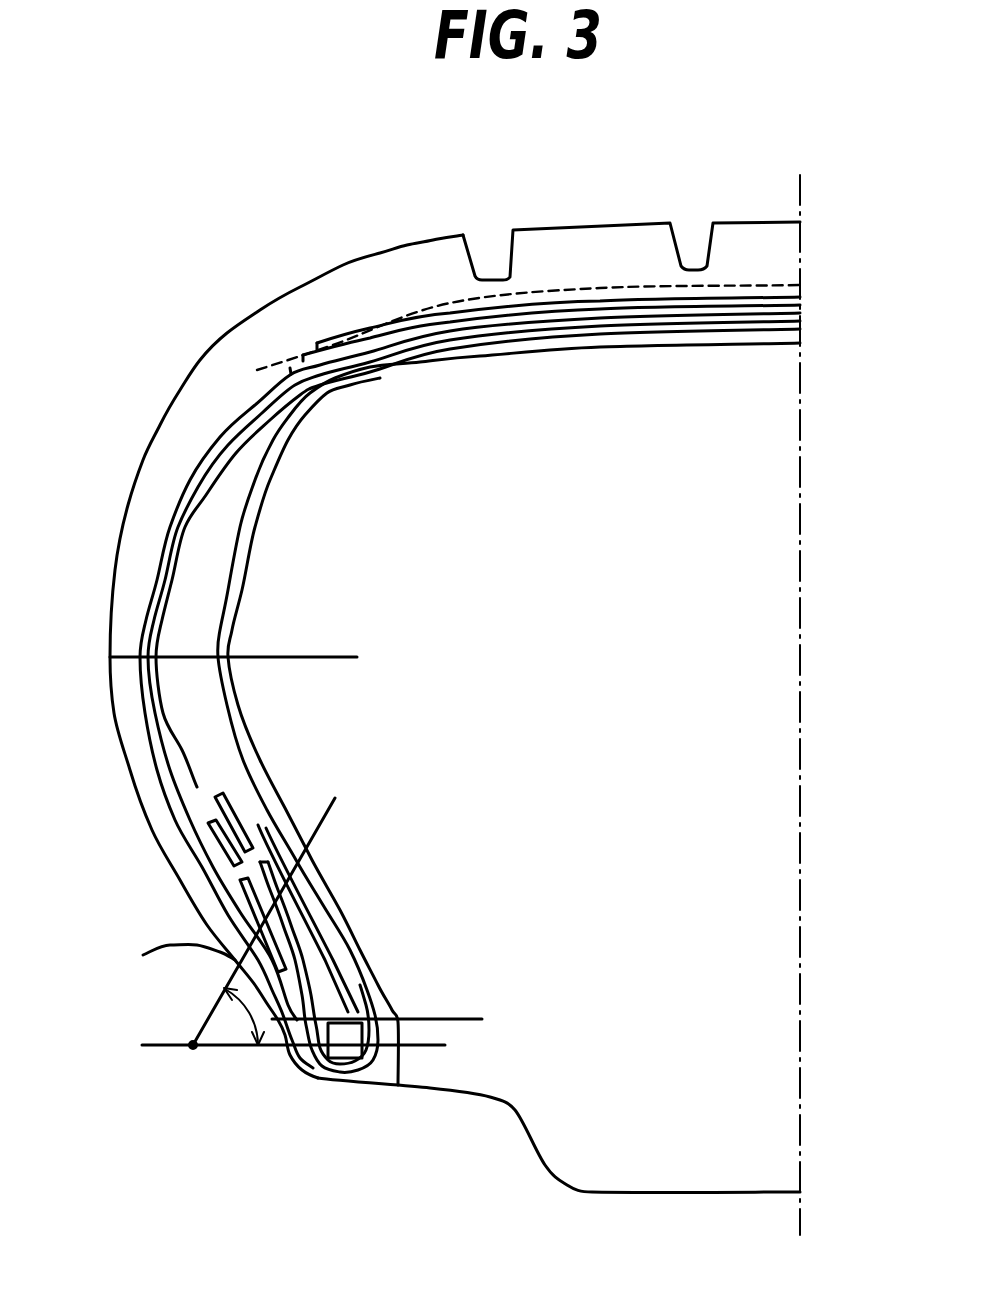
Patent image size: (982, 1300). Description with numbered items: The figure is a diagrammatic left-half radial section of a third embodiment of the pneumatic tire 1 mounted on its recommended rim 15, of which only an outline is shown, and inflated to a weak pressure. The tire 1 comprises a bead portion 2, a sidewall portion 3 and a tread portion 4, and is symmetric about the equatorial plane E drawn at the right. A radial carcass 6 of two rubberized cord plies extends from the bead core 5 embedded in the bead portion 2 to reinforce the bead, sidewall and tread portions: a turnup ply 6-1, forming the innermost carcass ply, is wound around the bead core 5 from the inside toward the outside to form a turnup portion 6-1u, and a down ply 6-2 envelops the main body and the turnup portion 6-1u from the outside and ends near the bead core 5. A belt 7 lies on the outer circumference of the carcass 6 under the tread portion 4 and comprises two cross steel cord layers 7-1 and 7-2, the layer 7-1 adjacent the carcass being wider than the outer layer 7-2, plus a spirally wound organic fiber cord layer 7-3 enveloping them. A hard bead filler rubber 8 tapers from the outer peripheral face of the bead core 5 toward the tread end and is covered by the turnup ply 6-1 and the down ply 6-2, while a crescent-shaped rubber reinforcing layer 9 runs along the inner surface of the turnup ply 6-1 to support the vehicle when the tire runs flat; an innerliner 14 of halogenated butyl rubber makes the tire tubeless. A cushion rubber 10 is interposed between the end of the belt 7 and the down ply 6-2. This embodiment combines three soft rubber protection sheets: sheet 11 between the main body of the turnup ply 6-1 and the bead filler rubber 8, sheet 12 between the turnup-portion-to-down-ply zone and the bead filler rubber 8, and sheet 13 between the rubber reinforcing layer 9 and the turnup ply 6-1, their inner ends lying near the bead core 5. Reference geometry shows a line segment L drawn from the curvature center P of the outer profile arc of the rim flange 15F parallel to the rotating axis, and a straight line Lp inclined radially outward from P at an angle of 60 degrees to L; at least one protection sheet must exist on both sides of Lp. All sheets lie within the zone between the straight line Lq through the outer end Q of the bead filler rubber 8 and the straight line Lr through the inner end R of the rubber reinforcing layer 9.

The pneumatic tire 1 is at (313, 247).
The bead portion 2 is at (392, 983).
The sidewall portion 3 is at (110, 717).
The tread portion 4 is at (742, 220).
The bead core 5 is at (345, 1060).
The radial carcass 6 is at (430, 692).
The turnup ply 6-1 is at (195, 783).
The turnup portion 6-1u is at (266, 860).
The down ply 6-2 is at (183, 827).
The belt 7 is at (494, 270).
The steel cord layer 7-1 is at (296, 362).
The steel cord layer 7-2 is at (343, 327).
The spirally wound layer 7-3 is at (417, 303).
The bead filler rubber 8 is at (300, 940).
The rubber reinforcing layer 9 is at (197, 644).
The cushion rubber 10 is at (300, 380).
The rubber protection sheet 11 is at (210, 867).
The rubber protection sheet 12 is at (310, 963).
The rubber protection sheet 13 is at (250, 825).
The innerliner 14 is at (233, 598).
The rim 15 is at (548, 1163).
The flange 15F is at (167, 949).
The equatorial plane E is at (805, 205).
The line segment L is at (150, 1047).
The curvature center P is at (193, 1048).
The outer end Q is at (112, 656).
The inner end R is at (383, 1028).
The straight line Lq is at (337, 656).
The straight line Lp is at (335, 800).
The straight line Lr is at (470, 1019).
The inclination angle 60 is at (258, 1048).